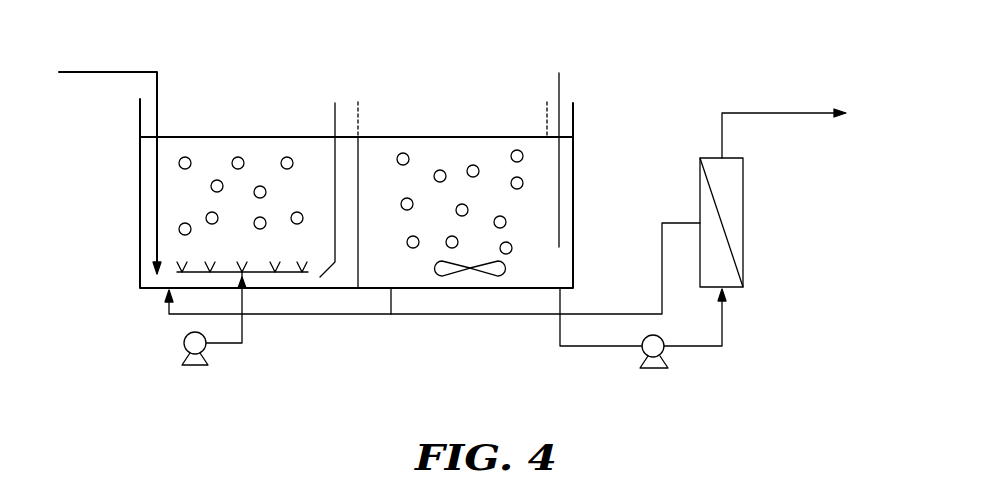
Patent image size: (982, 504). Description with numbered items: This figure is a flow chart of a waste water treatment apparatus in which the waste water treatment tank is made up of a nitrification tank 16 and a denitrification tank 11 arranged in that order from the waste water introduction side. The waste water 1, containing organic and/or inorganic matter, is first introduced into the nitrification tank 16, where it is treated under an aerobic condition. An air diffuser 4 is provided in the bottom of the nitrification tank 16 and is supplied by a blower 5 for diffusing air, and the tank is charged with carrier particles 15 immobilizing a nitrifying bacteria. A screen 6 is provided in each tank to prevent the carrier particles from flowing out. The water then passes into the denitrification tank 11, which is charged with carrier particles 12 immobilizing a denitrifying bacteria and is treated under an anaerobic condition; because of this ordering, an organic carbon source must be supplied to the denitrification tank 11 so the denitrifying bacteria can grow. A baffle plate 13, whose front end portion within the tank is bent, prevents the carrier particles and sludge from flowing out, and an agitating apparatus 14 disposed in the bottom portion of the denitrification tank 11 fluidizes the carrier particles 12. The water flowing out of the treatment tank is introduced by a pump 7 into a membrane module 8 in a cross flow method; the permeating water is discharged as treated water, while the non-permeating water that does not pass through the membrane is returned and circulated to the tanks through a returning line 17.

The waste water 1 is at (99, 71).
The air diffuser 4 is at (285, 272).
The blower 5 is at (184, 342).
The screen 6 is at (360, 127).
The pump 7 is at (664, 352).
The membrane module 8 is at (735, 223).
The denitrification tank 11 is at (424, 153).
The carrier particle 12 is at (475, 165).
The baffle plate 13 is at (336, 103).
The agitating apparatus 14 is at (490, 277).
The carrier particle 15 is at (237, 148).
The nitrification tank 16 is at (192, 148).
The returning line 17 is at (618, 313).